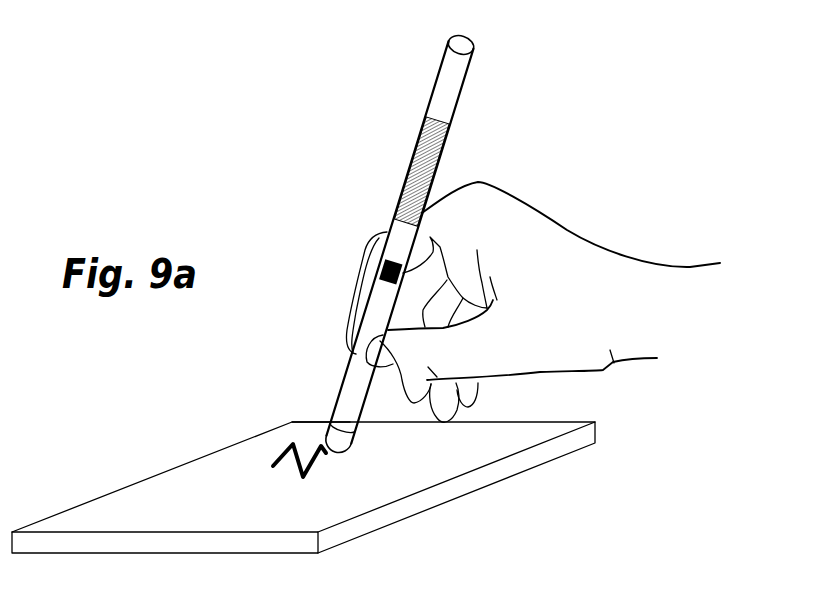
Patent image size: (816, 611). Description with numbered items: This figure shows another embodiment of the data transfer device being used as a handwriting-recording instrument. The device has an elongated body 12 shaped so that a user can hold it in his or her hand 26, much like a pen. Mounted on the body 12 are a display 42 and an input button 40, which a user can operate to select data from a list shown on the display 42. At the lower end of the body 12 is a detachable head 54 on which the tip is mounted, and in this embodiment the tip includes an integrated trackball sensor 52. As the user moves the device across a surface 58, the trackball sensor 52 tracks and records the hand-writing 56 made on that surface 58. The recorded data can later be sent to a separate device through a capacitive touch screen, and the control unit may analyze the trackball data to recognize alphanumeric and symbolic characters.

The body 12 is at (427, 97).
The display 42 is at (417, 134).
The input button 40 is at (383, 268).
The detachable head 54 is at (331, 424).
The hand 26 is at (568, 230).
The trackball sensor 52 is at (335, 452).
The surface 58 is at (182, 510).
The hand-writing 56 is at (278, 462).